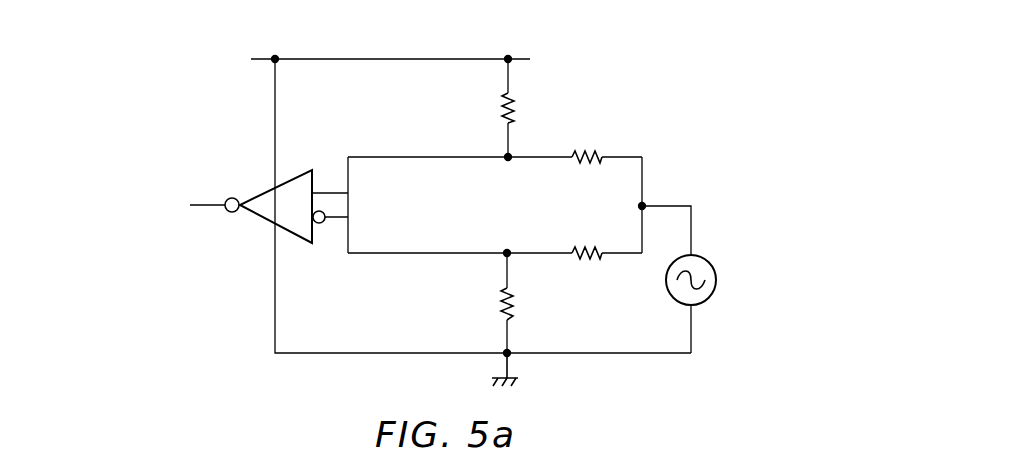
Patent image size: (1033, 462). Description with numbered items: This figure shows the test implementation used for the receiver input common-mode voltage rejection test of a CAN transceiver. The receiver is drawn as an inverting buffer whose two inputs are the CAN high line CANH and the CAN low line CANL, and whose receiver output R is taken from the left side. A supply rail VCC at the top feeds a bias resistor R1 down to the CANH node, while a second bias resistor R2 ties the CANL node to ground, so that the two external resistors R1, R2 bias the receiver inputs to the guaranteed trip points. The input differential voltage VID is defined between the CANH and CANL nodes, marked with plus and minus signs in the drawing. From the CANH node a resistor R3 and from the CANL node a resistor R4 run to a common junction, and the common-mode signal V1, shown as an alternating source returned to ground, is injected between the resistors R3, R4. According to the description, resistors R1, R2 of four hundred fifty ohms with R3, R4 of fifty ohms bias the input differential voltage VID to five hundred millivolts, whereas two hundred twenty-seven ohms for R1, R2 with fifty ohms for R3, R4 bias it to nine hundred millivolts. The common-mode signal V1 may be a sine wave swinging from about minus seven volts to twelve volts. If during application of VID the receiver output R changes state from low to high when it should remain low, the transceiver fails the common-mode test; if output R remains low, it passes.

The receiver output R is at (259, 206).
The resistor R1 is at (464, 110).
The resistor R2 is at (464, 306).
The resistor R3 is at (586, 141).
The resistor R4 is at (586, 274).
The common-mode signal V1 is at (705, 280).
The input differential voltage VID is at (512, 236).
The supply voltage VCC is at (387, 39).
The CAN high input CANH is at (387, 145).
The CAN low input CANL is at (385, 271).